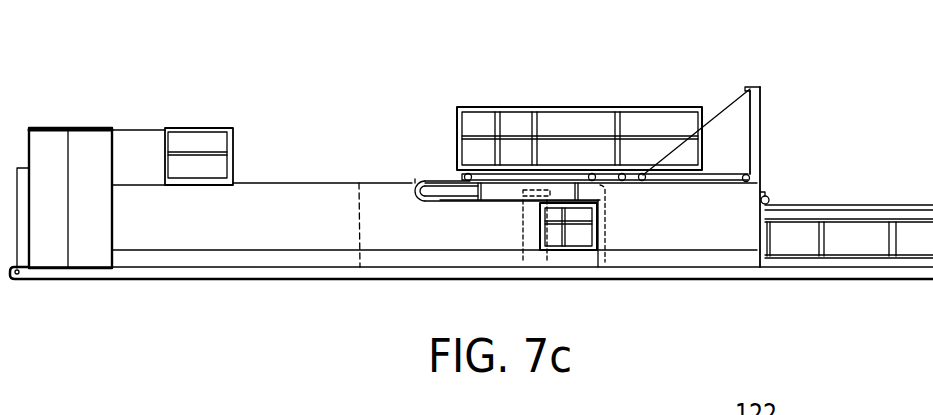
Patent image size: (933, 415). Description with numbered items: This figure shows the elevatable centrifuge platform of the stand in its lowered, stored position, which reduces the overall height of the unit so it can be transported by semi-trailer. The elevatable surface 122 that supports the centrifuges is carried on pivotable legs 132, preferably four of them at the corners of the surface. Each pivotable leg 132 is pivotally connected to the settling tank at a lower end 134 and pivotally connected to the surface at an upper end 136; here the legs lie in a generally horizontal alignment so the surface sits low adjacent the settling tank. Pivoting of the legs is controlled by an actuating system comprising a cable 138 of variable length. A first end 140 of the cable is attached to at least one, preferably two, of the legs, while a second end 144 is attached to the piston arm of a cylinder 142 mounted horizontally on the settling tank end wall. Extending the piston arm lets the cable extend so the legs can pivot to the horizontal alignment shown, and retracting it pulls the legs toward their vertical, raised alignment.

The elevatable surface 122 is at (593, 174).
The pivotable legs 132 is at (497, 174).
The lower end 134 is at (579, 176).
The upper end 136 is at (466, 176).
The cable 138 is at (722, 108).
The first end of cable 140 is at (644, 174).
The cylinder 142 is at (770, 198).
The second end of cable 144 is at (763, 193).